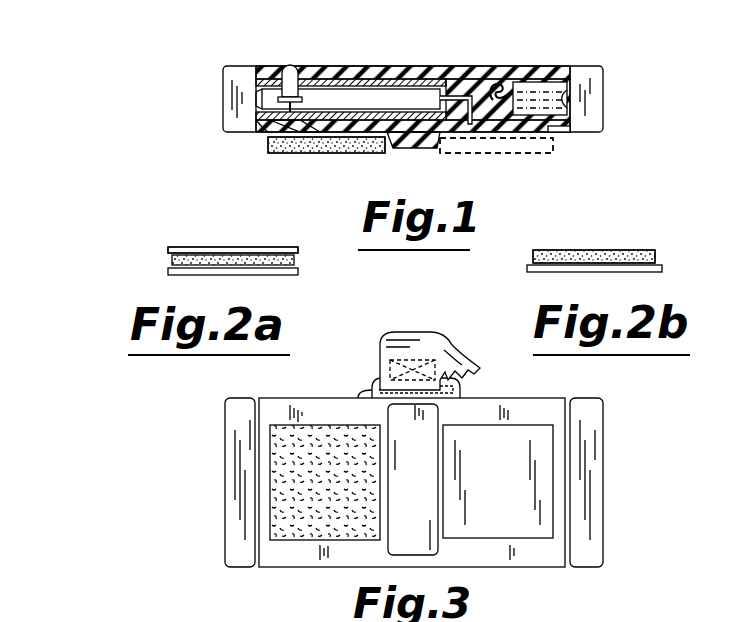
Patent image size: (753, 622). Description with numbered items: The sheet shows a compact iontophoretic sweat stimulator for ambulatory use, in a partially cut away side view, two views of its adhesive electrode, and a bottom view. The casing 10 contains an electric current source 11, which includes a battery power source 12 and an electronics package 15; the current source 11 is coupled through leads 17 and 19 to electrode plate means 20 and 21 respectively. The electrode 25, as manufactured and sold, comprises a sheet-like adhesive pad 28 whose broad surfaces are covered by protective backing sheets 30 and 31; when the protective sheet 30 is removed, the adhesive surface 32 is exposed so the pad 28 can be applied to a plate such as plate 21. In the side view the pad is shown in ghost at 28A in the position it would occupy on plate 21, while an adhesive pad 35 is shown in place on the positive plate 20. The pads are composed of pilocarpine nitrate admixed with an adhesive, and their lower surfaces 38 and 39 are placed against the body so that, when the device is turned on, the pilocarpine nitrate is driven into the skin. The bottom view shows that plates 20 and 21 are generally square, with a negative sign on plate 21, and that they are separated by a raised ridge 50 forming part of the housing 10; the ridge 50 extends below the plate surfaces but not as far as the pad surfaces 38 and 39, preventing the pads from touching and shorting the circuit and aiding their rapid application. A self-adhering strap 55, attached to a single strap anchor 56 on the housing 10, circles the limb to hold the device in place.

In FIG. 1, the casing 10 is at (603, 90).
In FIG. 3, the casing 10 is at (603, 403).
In FIG. 1, the electric current source 11 is at (428, 58).
In FIG. 1, the battery power source 12 is at (547, 92).
In FIG. 1, the electronics package 15 is at (310, 84).
In FIG. 1, the lead 17 is at (262, 128).
In FIG. 1, the lead 19 is at (478, 122).
In FIG. 1, the electrode plate 20 is at (292, 137).
In FIG. 1, the electrode plate 21 is at (557, 133).
In FIG. 3, the electrode plate 21 is at (525, 480).
In FIG. 2A, the electrode 25 is at (155, 262).
In FIG. 2A, the adhesive pad 28 is at (298, 259).
In FIG. 2B, the adhesive pad 28 is at (656, 257).
In FIG. 1, the adhesive pad 28A is at (538, 153).
In FIG. 2A, the protective backing sheet 30 is at (228, 247).
In FIG. 2A, the protective backing sheet 31 is at (298, 272).
In FIG. 2B, the protective backing sheet 31 is at (662, 272).
In FIG. 2B, the adhesive surface 32 is at (600, 250).
In FIG. 1, the adhesive pad 35 is at (307, 153).
In FIG. 3, the adhesive pad 35 is at (312, 515).
In FIG. 1, the lower surface 38 is at (343, 153).
In FIG. 1, the lower surface 39 is at (458, 153).
In FIG. 1, the raised ridge 50 is at (428, 150).
In FIG. 3, the raised ridge 50 is at (420, 428).
In FIG. 3, the strap 55 is at (422, 332).
In FIG. 3, the strap anchor 56 is at (372, 386).